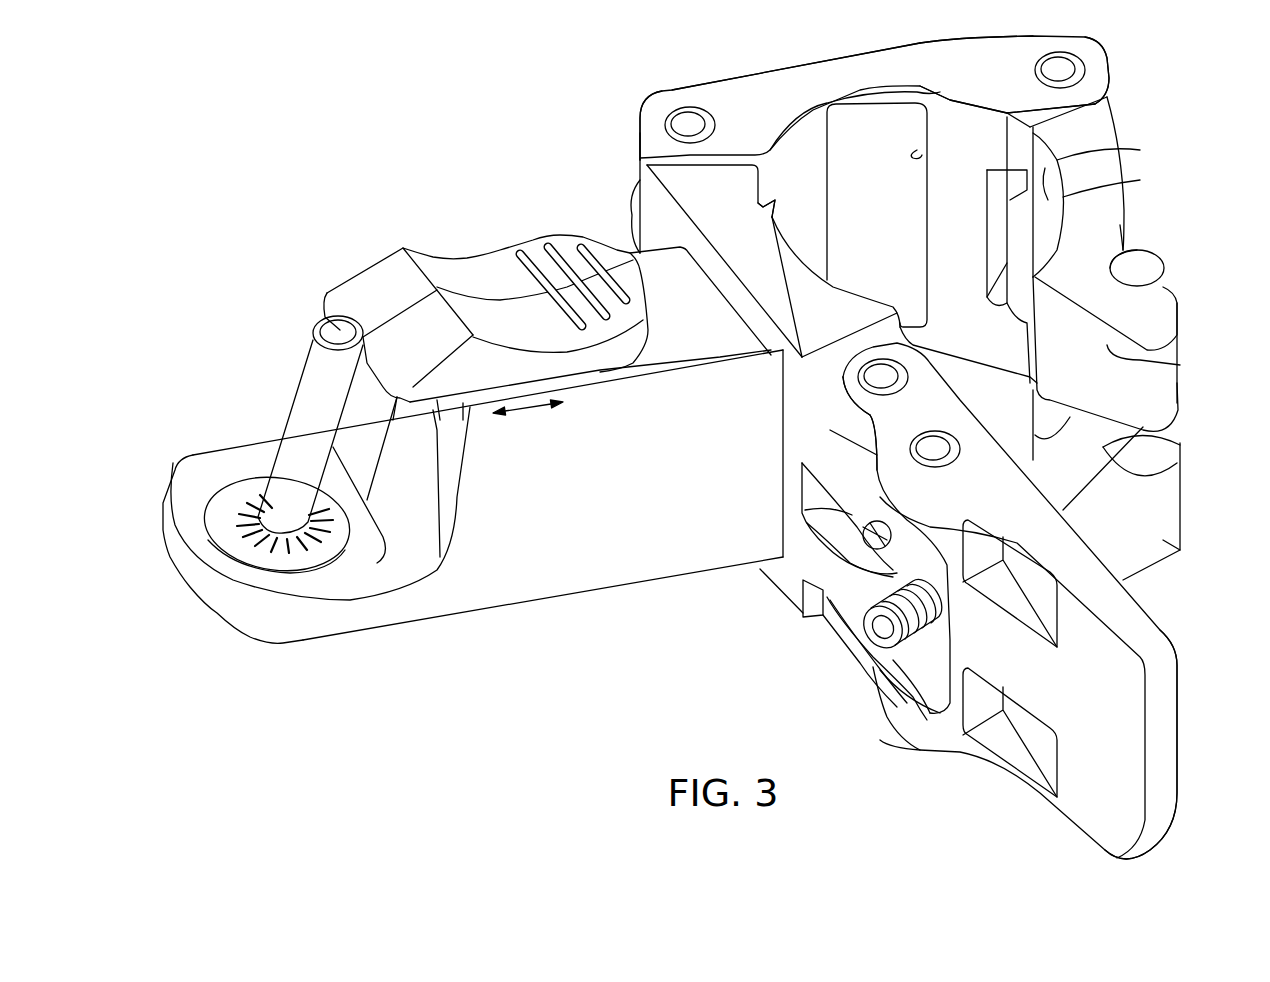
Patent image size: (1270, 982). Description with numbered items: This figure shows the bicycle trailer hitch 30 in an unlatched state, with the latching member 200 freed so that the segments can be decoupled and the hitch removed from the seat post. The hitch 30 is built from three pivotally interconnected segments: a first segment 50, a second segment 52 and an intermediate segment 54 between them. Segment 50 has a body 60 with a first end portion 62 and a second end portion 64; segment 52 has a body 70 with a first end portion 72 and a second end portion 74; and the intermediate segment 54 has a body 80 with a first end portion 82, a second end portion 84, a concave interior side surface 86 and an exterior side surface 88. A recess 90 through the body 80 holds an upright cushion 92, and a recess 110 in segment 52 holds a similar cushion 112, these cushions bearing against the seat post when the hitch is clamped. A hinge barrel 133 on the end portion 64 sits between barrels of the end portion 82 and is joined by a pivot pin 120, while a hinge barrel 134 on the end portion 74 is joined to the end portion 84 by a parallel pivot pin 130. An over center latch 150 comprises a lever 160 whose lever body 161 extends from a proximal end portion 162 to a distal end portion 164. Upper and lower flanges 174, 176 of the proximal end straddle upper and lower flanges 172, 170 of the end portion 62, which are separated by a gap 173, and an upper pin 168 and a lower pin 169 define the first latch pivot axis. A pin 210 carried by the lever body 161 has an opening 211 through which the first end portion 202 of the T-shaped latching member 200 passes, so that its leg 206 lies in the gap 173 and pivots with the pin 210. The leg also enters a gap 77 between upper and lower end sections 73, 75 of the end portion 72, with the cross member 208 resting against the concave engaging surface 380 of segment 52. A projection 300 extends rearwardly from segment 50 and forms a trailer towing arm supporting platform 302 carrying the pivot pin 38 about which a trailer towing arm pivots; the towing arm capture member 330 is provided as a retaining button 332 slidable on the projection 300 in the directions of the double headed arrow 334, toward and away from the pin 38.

The bicycle trailer hitch 30 is at (605, 102).
The pivot pin 38 is at (303, 387).
The first segment 50 is at (648, 209).
The second segment 52 is at (1125, 217).
The intermediate segment 54 is at (780, 62).
The body 60 is at (797, 322).
The first end portion 62 is at (783, 493).
The second end portion 64 is at (677, 173).
The body 70 is at (1060, 277).
The first end portion 72 is at (1150, 361).
The upper end section 73 is at (1157, 390).
The second end portion 74 is at (1103, 110).
The lower end section 75 is at (1163, 542).
The gap 77 is at (1160, 433).
The body 80 is at (861, 82).
The first end portion 82 is at (654, 100).
The second end portion 84 is at (1093, 57).
The interior side surface 86 is at (943, 90).
The exterior side surface 88 is at (837, 55).
The recess 90 is at (917, 150).
The cushion 92 is at (855, 197).
The recess 110 is at (1133, 182).
The cushion 112 is at (1133, 152).
The pivot pin 120 is at (688, 115).
The pivot pin 130 is at (1060, 68).
The hinge barrel 133 is at (772, 222).
The hinge barrel 134 is at (1020, 230).
The over center latch 150 is at (852, 683).
The lever 160 is at (963, 773).
The lever body 161 is at (1027, 707).
The proximal end portion 162 is at (783, 377).
The distal end portion 164 is at (1163, 797).
The first upper pin 168 is at (873, 380).
The second lower pin 169 is at (850, 515).
The lower flange 170 is at (812, 587).
The upper flange 172 is at (843, 490).
The gap 173 is at (850, 540).
The upper flange 174 is at (843, 407).
The lower flange 176 is at (830, 627).
The latching member 200 is at (1092, 489).
The first latching member end portion 202 is at (867, 647).
The leg 206 is at (1165, 458).
The cross member portion 208 is at (1165, 283).
The pin 210 is at (933, 447).
The opening 211 is at (903, 670).
The projection 300 is at (513, 593).
The trailer towing arm supporting platform 302 is at (253, 617).
The pad 330 is at (432, 229).
The retaining button 332 is at (487, 270).
The double headed arrow 334 is at (520, 410).
The engaging surface 380 is at (1125, 248).